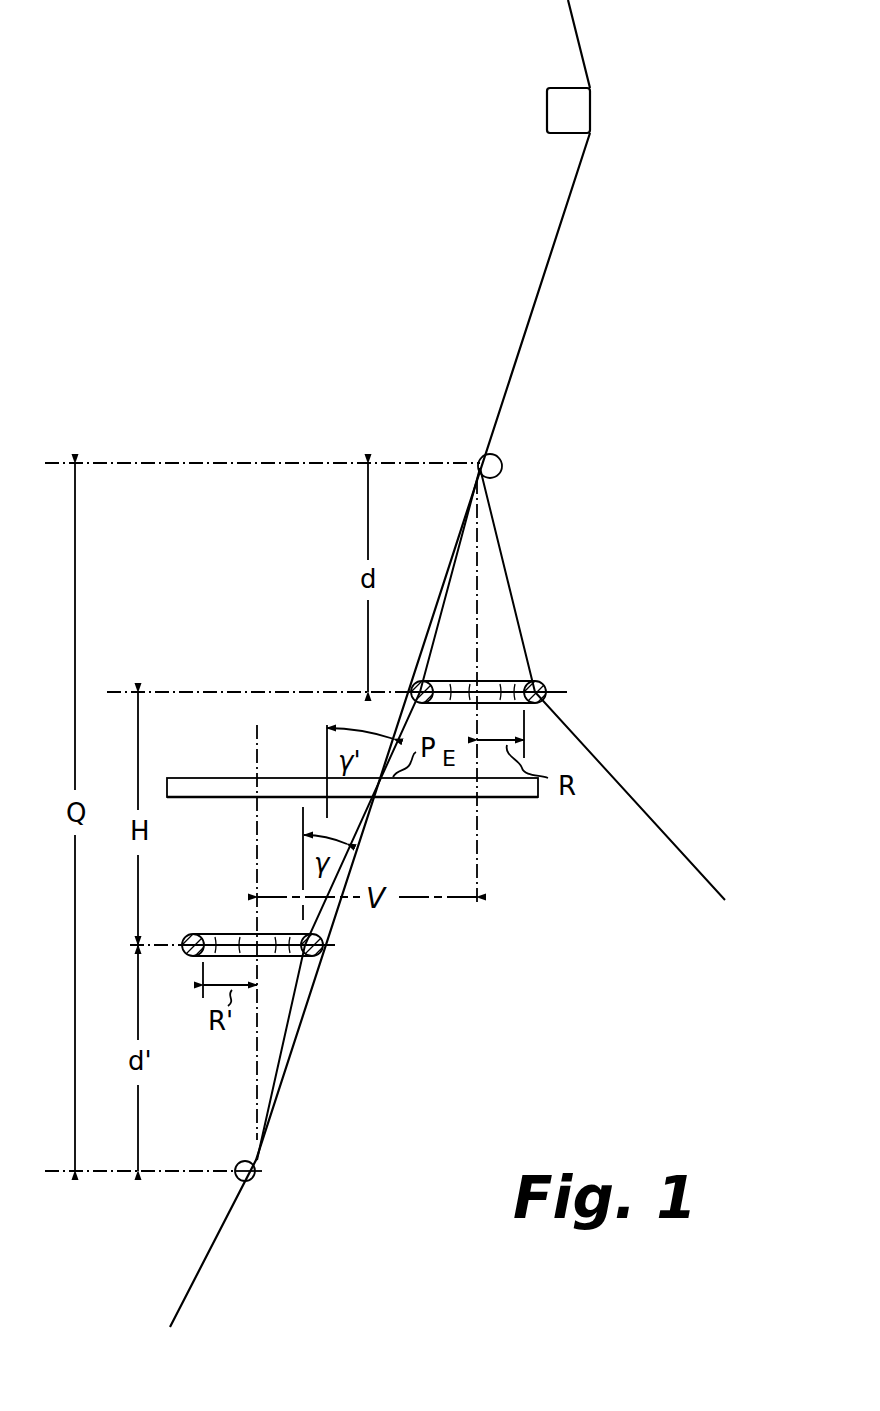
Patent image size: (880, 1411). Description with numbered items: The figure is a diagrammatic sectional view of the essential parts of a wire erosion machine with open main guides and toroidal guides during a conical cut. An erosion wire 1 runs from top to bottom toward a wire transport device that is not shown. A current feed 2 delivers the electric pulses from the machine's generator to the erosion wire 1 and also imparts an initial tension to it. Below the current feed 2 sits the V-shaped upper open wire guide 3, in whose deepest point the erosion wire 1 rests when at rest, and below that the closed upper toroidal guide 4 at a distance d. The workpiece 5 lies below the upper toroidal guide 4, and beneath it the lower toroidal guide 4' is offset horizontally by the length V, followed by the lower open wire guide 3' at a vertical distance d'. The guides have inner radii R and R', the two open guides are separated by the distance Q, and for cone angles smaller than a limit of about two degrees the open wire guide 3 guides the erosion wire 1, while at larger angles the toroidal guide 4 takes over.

The erosion wire 1 is at (548, 258).
The current feed 2 is at (549, 114).
The upper open wire guide 3 is at (491, 796).
The upper toroidal guide 4 is at (495, 665).
The workpiece 5 is at (515, 799).
The lower open wire guide 3' is at (272, 1183).
The lower toroidal guide 4' is at (252, 912).